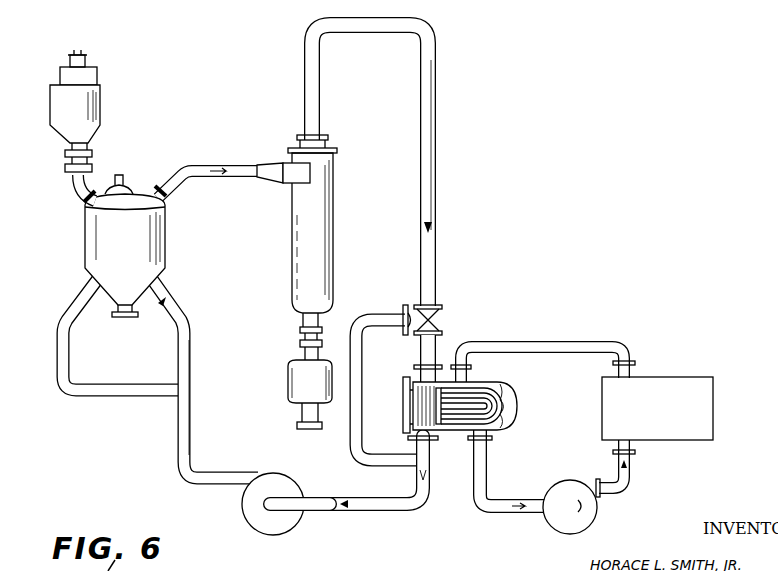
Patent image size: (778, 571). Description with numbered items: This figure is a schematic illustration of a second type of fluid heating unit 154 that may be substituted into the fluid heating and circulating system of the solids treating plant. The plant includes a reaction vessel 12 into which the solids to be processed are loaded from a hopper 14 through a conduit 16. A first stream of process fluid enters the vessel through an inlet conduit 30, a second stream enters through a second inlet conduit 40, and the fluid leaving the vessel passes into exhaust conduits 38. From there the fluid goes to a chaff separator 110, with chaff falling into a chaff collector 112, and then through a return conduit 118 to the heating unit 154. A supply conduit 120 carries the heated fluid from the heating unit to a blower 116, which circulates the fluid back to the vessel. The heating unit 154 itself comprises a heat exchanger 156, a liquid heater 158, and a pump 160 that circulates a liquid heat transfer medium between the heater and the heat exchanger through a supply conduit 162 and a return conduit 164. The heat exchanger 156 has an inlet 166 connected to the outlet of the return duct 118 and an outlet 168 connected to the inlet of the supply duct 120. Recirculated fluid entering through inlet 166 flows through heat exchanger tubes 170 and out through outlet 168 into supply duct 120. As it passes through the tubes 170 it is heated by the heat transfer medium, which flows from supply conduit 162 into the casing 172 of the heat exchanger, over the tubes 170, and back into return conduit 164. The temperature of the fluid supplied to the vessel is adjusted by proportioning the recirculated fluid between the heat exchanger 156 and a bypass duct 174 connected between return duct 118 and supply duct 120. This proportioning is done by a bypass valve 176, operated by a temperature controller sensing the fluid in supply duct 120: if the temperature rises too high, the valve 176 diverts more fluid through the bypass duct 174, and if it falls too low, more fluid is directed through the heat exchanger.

The reaction vessel 12 is at (100, 245).
The hopper 14 is at (56, 108).
The conduit 16 is at (70, 192).
The inlet conduit 30 is at (163, 303).
The exhaust conduits 38 is at (170, 186).
The second inlet conduit 40 is at (58, 350).
The chaff separator 110 is at (295, 207).
The chaff collector 112 is at (290, 380).
The blower 116 is at (276, 531).
The conduit 118 is at (437, 63).
The conduit 120 is at (353, 512).
The fluid heating unit 154 is at (552, 332).
The heat exchanger 156 is at (530, 405).
The liquid heater 158 is at (688, 378).
The pump 160 is at (590, 516).
The supply conduit 162 is at (584, 341).
The return conduit 164 is at (500, 513).
The inlet 166 is at (417, 373).
The outlet 168 is at (417, 437).
The heat exchanger tubes 170 is at (487, 385).
The casing 172 is at (498, 433).
The bypass duct 174 is at (354, 462).
The bypass valve 176 is at (437, 322).